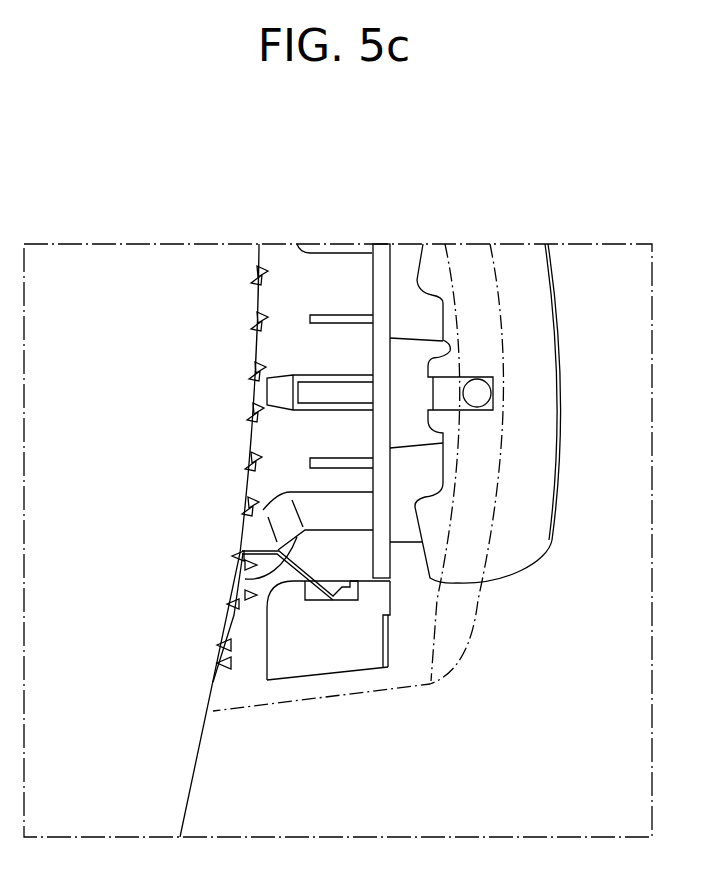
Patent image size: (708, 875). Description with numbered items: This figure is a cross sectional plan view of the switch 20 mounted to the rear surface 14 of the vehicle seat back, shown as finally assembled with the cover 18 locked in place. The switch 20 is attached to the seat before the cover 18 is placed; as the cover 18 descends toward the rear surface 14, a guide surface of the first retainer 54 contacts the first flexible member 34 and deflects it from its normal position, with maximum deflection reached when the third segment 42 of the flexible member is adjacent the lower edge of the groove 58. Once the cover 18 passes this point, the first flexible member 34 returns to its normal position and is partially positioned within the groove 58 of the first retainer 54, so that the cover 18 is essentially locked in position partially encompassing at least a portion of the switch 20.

The rear surface 14 is at (142, 464).
The cover 18 is at (475, 628).
The switch 20 is at (385, 244).
The first flexible member 34 is at (245, 578).
The third segment 42 is at (333, 600).
The first retainer 54 is at (330, 675).
The groove 58 is at (300, 643).